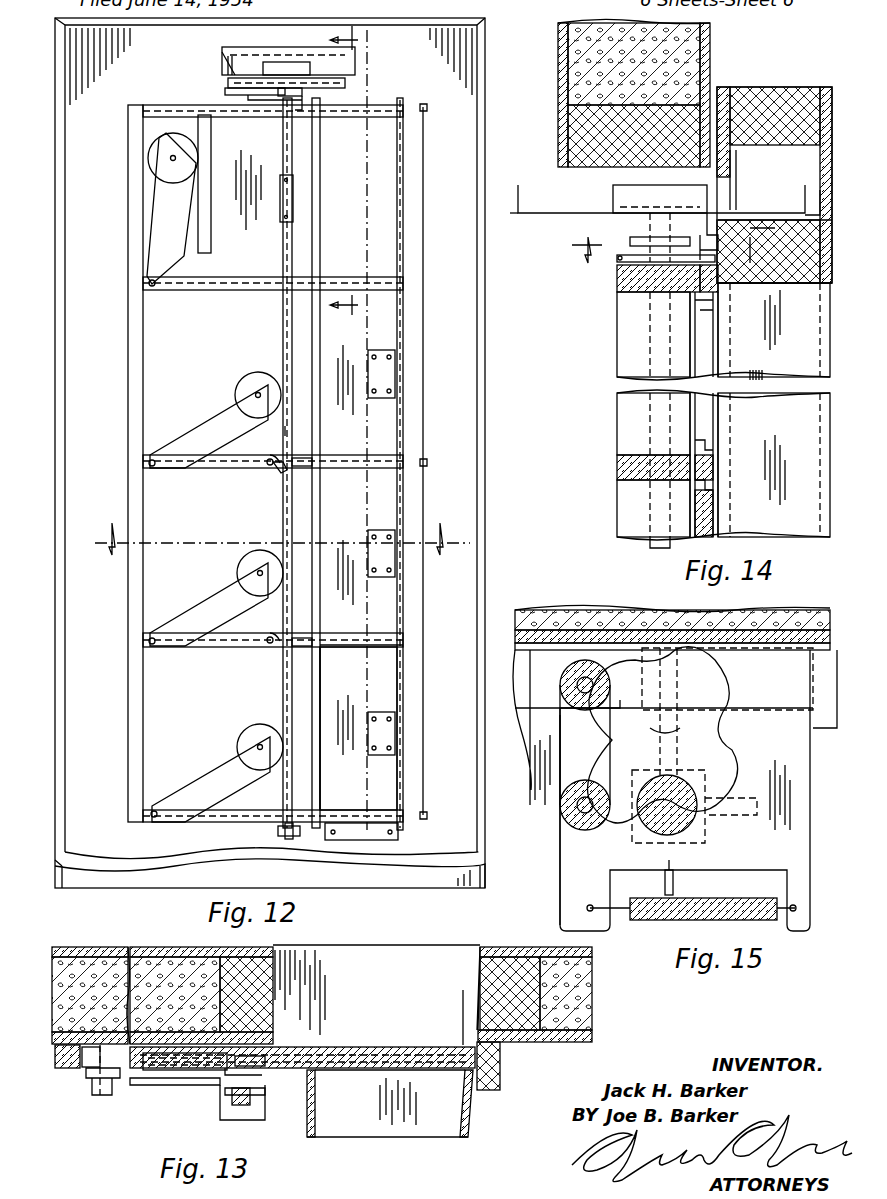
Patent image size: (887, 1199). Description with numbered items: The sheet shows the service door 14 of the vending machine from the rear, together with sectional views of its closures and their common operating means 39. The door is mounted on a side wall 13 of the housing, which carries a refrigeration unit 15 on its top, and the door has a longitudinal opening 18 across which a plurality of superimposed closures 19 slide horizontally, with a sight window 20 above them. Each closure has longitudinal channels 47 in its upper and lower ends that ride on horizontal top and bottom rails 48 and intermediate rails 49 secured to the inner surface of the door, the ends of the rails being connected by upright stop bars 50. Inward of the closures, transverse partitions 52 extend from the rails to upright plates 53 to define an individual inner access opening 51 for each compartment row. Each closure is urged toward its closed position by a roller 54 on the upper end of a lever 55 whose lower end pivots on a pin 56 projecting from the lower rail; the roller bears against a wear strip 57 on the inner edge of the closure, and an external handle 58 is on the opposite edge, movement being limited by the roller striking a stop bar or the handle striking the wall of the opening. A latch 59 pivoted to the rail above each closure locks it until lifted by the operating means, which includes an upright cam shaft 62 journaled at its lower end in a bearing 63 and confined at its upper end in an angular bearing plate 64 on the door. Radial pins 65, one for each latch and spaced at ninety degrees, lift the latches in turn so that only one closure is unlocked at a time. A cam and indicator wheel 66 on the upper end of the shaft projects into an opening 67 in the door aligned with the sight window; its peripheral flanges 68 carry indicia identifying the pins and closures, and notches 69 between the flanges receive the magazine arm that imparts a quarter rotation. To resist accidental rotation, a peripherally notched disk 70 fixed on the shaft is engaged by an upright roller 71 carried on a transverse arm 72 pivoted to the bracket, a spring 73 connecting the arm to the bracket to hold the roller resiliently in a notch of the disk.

In FIG. 12, the side wall 13 is at (275, 533).
In FIG. 14, the side wall 13 is at (710, 38).
In FIG. 12, the service door 14 is at (490, 396).
In FIG. 13, the service door 14 is at (170, 948).
In FIG. 14, the service door 14 is at (750, 84).
In FIG. 15, the service door 14 is at (580, 600).
In FIG. 14, the refrigeration unit 15 is at (672, 245).
In FIG. 12, the longitudinal opening 18 is at (390, 138).
In FIG. 13, the longitudinal opening 18 is at (402, 948).
In FIG. 14, the longitudinal opening 18 is at (786, 540).
In FIG. 12, the closures 19 is at (233, 268).
In FIG. 13, the closures 19 is at (395, 1046).
In FIG. 14, the closures 19 is at (715, 348).
In FIG. 15, the closures 19 is at (815, 730).
In FIG. 14, the sight window 20 is at (822, 188).
In FIG. 12, the operating means 39 is at (225, 80).
In FIG. 14, the longitudinal channels 47 is at (710, 440).
In FIG. 12, the top and bottom rails 48 is at (148, 104).
In FIG. 14, the top and bottom rails 48 is at (721, 292).
In FIG. 12, the intermediate rails 49 is at (230, 468).
In FIG. 13, the intermediate rails 49 is at (90, 1075).
In FIG. 14, the intermediate rails 49 is at (718, 470).
In FIG. 12, the stop bars 50 is at (128, 598).
In FIG. 13, the stop bars 50 is at (78, 1068).
In FIG. 12, the inner access opening 51 is at (390, 692).
In FIG. 13, the inner access opening 51 is at (418, 1128).
In FIG. 14, the inner access opening 51 is at (617, 332).
In FIG. 12, the transverse partitions 52 is at (344, 646).
In FIG. 13, the transverse partitions 52 is at (368, 1138).
In FIG. 14, the transverse partitions 52 is at (640, 296).
In FIG. 12, the upright plates 53 is at (322, 800).
In FIG. 13, the upright plates 53 is at (470, 1125).
In FIG. 14, the upright plates 53 is at (617, 424).
In FIG. 12, the roller 54 is at (150, 132).
In FIG. 13, the roller 54 is at (175, 1070).
In FIG. 12, the lever 55 is at (208, 416).
In FIG. 13, the lever 55 is at (156, 1085).
In FIG. 12, the pin 56 is at (186, 614).
In FIG. 13, the pin 56 is at (112, 1095).
In FIG. 12, the wear strip 57 is at (294, 428).
In FIG. 13, the wear strip 57 is at (262, 1078).
In FIG. 12, the handle 58 is at (314, 220).
In FIG. 13, the handle 58 is at (458, 1004).
In FIG. 14, the handle 58 is at (765, 376).
In FIG. 12, the latch 59 is at (278, 472).
In FIG. 15, the latch 59 is at (710, 700).
In FIG. 12, the cam shaft 62 is at (286, 694).
In FIG. 13, the cam shaft 62 is at (245, 1108).
In FIG. 14, the cam shaft 62 is at (650, 540).
In FIG. 15, the cam shaft 62 is at (680, 790).
In FIG. 12, the bearing 63 is at (288, 826).
In FIG. 13, the bearing 63 is at (222, 1118).
In FIG. 12, the bearing plate 64 is at (250, 90).
In FIG. 14, the bearing plate 64 is at (700, 219).
In FIG. 15, the bearing plate 64 is at (812, 808).
In FIG. 12, the pins 65 is at (318, 470).
In FIG. 13, the pins 65 is at (268, 1090).
In FIG. 14, the pins 65 is at (680, 305).
In FIG. 15, the pins 65 is at (757, 810).
In FIG. 12, the cam and indicator wheel 66 is at (350, 80).
In FIG. 14, the cam and indicator wheel 66 is at (530, 216).
In FIG. 12, the opening 67 is at (230, 58).
In FIG. 14, the opening 67 is at (772, 150).
In FIG. 12, the flanges 68 is at (252, 58).
In FIG. 14, the flanges 68 is at (613, 200).
In FIG. 14, the notches 69 is at (558, 218).
In FIG. 12, the notched disk 70 is at (300, 94).
In FIG. 14, the notched disk 70 is at (640, 238).
In FIG. 15, the notched disk 70 is at (748, 760).
In FIG. 15, the roller 71 is at (578, 812).
In FIG. 14, the transverse arm 72 is at (638, 256).
In FIG. 15, the transverse arm 72 is at (560, 872).
In FIG. 12, the spring 73 is at (310, 88).
In FIG. 14, the spring 73 is at (620, 278).
In FIG. 15, the spring 73 is at (762, 920).